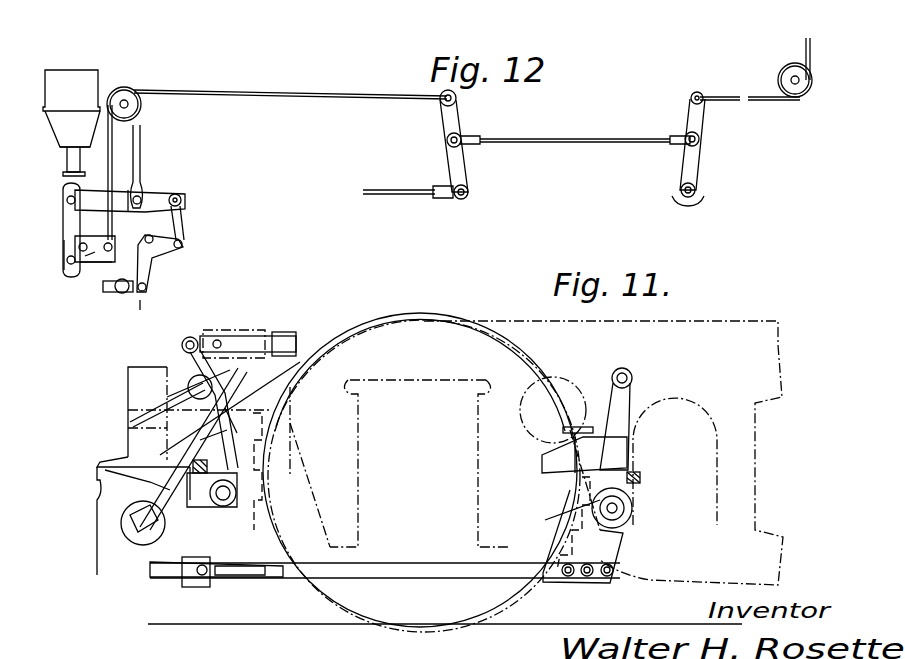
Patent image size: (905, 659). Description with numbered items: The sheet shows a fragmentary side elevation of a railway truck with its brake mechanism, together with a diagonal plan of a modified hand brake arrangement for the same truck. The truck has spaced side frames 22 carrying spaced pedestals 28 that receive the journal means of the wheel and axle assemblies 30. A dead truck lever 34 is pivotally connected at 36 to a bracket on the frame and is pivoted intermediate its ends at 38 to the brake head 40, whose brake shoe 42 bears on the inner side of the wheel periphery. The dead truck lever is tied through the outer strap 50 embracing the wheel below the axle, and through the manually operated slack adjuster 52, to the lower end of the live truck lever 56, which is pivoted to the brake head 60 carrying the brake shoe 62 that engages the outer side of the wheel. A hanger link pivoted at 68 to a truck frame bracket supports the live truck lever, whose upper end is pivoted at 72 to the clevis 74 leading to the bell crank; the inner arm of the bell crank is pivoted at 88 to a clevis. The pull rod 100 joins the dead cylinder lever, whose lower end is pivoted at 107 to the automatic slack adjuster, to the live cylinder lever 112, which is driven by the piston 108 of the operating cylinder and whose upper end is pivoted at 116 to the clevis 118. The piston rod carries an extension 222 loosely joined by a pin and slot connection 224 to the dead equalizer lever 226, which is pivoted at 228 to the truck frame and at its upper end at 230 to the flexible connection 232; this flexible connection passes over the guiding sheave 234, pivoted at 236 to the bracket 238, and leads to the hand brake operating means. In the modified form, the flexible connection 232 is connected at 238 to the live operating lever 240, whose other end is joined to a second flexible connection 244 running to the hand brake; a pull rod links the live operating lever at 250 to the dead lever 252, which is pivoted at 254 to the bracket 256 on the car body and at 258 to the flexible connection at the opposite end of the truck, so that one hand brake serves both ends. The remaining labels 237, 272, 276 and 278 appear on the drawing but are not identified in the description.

In FIG. 12, the side frames 22 is at (340, 7).
In FIG. 11, the side frames 22 is at (738, 350).
In FIG. 11, the pedestals 28 is at (350, 507).
In FIG. 11, the wheel and axle assemblies 30 is at (343, 587).
In FIG. 11, the dead truck lever 34 is at (630, 430).
In FIG. 11, the pivot connection of dead truck lever 36 is at (627, 370).
In FIG. 11, the pivot connection of dead truck lever to brake head 38 is at (614, 508).
In FIG. 11, the brake head 40 is at (577, 584).
In FIG. 11, the brake shoe 42 is at (560, 576).
In FIG. 11, the outer strap 50 is at (377, 568).
In FIG. 11, the manually operated slack adjuster 52 is at (210, 585).
In FIG. 11, the live truck lever 56 is at (190, 372).
In FIG. 11, the brake head 60 is at (255, 545).
In FIG. 11, the brake shoe 62 is at (292, 519).
In FIG. 11, the pivot connection of hanger link to frame bracket 68 is at (200, 343).
In FIG. 11, the pivot connection of live truck lever to clevis 72 is at (191, 337).
In FIG. 12, the clevis 74 is at (120, 292).
In FIG. 12, the pivot connection of bell crank inner arm to clevis 88 is at (184, 248).
In FIG. 12, the pull rod 100 is at (141, 143).
In FIG. 12, the pivot connection of dead cylinder lever to slack adjuster 107 is at (71, 89).
In FIG. 11, the pivot connection of dead cylinder lever to slack adjuster 107 is at (112, 515).
In FIG. 12, the piston rod 108 is at (66, 158).
In FIG. 11, the piston rod 108 is at (128, 524).
In FIG. 12, the live cylinder lever 112 is at (150, 200).
In FIG. 12, the pivot connection of live cylinder lever to clevis 116 is at (181, 197).
In FIG. 12, the clevis 118 is at (186, 216).
In FIG. 12, the extension 222 is at (66, 216).
In FIG. 12, the pin and slot connection 224 is at (67, 252).
In FIG. 12, the dead equalizer lever 226 is at (90, 262).
In FIG. 11, the dead equalizer lever 226 is at (172, 445).
In FIG. 12, the pivot connection of equalizer lever to truck frame 228 is at (90, 262).
In FIG. 12, the pivot connection of equalizer lever to flexible connection 230 is at (92, 252).
In FIG. 12, the flexible connection 232 is at (258, 98).
In FIG. 12, the guiding sheave 234 is at (785, 64).
In FIG. 12, the pivot connection of guiding sheave 236 is at (124, 100).
In FIG. 12, the cable 237 is at (138, 99).
In FIG. 12, the bracket 238 is at (442, 101).
In FIG. 12, the live operating lever 240 is at (448, 122).
In FIG. 12, the flexible connection 244 is at (383, 196).
In FIG. 12, the connection of pull rod to dead lever 250 is at (699, 138).
In FIG. 12, the dead lever 252 is at (694, 162).
In FIG. 12, the pivot connection of dead lever to bracket 254 is at (696, 191).
In FIG. 12, the bracket 256 is at (710, 200).
In FIG. 12, the pivot connection of dead lever to flexible connection 258 is at (697, 92).
In FIG. 12, the pivot 272 is at (467, 197).
In FIG. 12, the pivot 276 is at (462, 140).
In FIG. 12, the rod 278 is at (148, 287).